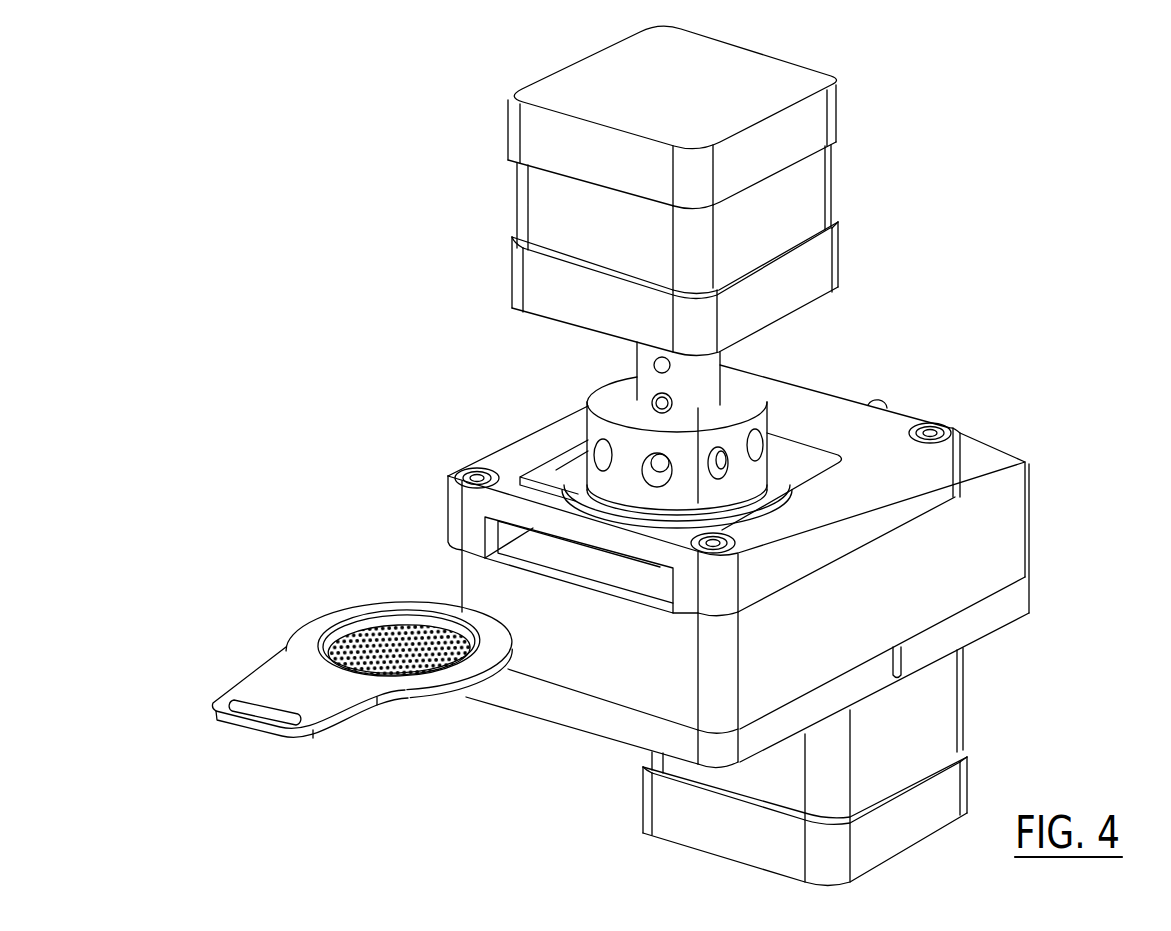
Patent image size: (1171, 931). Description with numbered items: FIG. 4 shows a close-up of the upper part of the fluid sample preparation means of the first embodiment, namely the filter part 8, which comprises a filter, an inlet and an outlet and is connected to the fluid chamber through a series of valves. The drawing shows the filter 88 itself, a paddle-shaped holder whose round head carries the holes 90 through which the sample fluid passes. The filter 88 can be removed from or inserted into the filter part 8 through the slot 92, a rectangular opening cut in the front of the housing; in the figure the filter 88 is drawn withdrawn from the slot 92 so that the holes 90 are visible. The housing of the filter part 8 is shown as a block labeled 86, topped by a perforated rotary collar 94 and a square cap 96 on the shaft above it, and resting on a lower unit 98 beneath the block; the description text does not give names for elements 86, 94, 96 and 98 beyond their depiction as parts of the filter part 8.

The filter part 8 is at (300, 349).
The housing block 86 is at (1040, 398).
The filter 88 is at (323, 702).
The holes 90 is at (372, 634).
The slot 92 is at (622, 570).
The rotary collar 94 is at (597, 401).
The cap 96 is at (820, 184).
The motor 98 is at (950, 723).